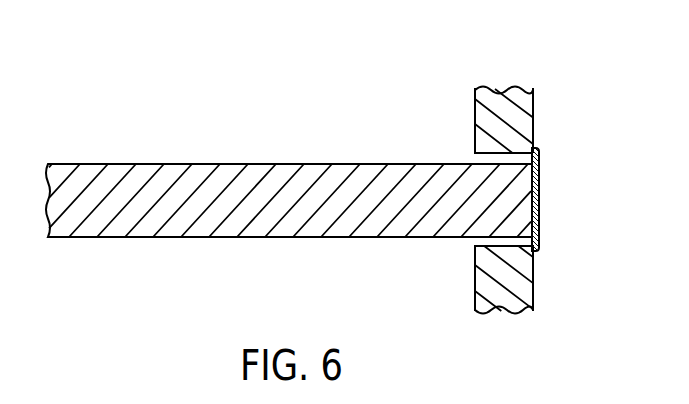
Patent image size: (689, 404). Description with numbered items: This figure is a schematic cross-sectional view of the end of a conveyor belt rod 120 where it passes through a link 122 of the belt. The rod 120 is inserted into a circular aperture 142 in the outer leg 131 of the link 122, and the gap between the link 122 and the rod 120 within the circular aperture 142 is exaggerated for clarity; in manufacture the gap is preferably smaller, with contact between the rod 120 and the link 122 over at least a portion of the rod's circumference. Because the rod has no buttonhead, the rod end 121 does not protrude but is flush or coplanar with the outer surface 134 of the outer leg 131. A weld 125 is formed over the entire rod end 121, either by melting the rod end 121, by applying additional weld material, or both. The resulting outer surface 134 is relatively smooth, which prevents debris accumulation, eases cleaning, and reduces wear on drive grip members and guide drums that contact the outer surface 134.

The rod 120 is at (203, 172).
The rod end 121 is at (522, 210).
The link 122 is at (481, 117).
The weld 125 is at (540, 162).
The outer leg 131 is at (529, 84).
The outer surface 134 is at (536, 116).
The circular aperture 142 is at (480, 242).